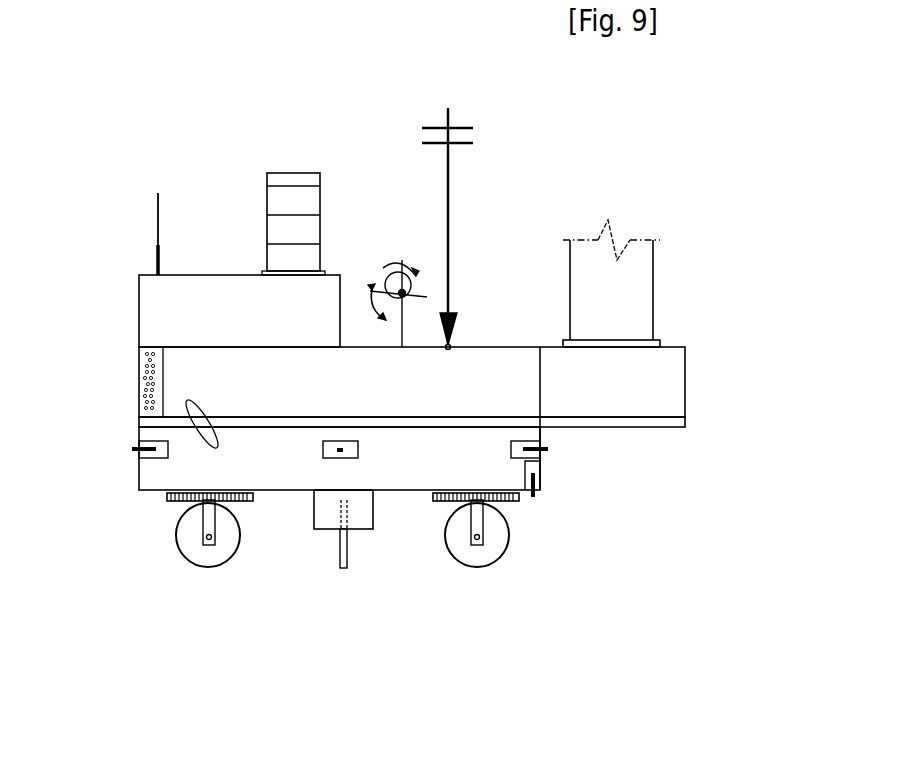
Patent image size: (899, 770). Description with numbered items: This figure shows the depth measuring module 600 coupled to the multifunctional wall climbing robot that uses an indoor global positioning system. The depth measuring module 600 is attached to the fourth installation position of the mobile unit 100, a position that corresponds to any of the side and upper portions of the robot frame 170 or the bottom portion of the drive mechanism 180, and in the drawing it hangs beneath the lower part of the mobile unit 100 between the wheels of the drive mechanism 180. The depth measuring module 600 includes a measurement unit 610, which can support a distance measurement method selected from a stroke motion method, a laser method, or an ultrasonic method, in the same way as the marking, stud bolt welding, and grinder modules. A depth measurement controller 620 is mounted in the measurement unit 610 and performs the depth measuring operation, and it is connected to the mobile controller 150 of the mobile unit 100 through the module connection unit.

The mobile unit 100 is at (590, 195).
The mobile controller 150 is at (477, 368).
The robot frame 170 is at (545, 420).
The drive mechanism 180 is at (155, 474).
The depth measuring module 600 is at (312, 490).
The measurement unit 610 is at (313, 495).
The depth measurement controller 620 is at (338, 552).